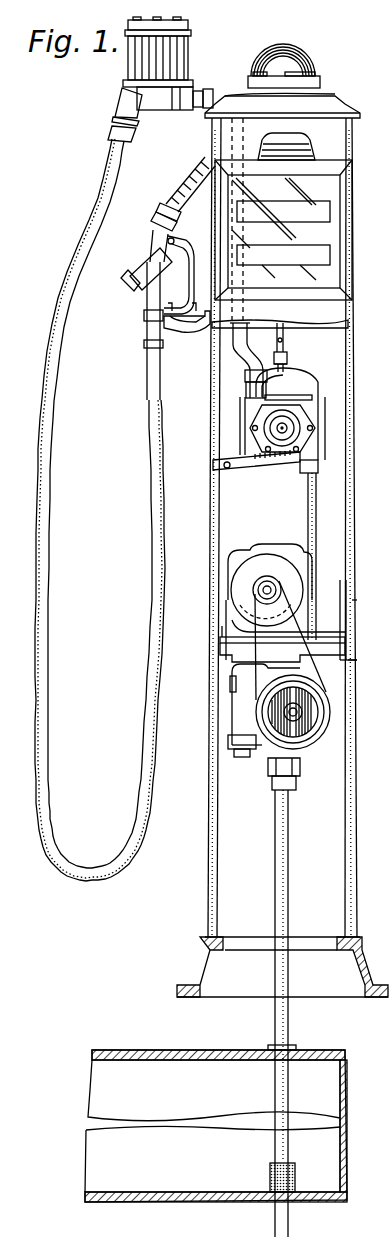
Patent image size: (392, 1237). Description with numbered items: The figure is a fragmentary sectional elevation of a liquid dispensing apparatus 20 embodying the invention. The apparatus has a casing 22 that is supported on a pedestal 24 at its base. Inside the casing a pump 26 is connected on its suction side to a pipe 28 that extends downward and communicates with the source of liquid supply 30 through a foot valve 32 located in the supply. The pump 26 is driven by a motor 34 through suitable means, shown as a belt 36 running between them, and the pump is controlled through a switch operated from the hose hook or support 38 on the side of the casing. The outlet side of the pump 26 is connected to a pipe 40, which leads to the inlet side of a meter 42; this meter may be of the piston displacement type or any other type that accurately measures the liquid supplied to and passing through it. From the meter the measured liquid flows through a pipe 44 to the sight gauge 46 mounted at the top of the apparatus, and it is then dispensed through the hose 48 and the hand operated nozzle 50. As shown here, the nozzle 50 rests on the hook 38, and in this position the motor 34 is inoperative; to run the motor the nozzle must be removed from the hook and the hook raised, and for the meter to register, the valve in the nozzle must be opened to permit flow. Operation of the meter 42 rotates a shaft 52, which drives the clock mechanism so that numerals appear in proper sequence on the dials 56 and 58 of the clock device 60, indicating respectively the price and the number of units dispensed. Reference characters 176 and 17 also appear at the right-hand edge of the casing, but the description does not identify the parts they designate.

The liquid dispensing apparatus 20 is at (357, 362).
The casing 22 is at (360, 764).
The pedestal 24 is at (380, 948).
The pump 26 is at (237, 708).
The pipe 28 is at (275, 807).
The source of liquid supply 30 is at (347, 1072).
The foot valve 32 is at (296, 1169).
The motor 34 is at (237, 578).
The belt 36 is at (257, 624).
The hose hook 38 is at (192, 325).
The pipe 40 is at (307, 503).
The meter 42 is at (318, 438).
The pipe 44 is at (240, 356).
The sight gauge 46 is at (184, 58).
The hose 48 is at (52, 480).
The hand operated nozzle 50 is at (153, 240).
The shaft 52 is at (287, 348).
The dial 56 is at (318, 208).
The dial 58 is at (320, 262).
The clock device 60 is at (320, 180).
The frame member 176 is at (372, 589).
The frame member 17 is at (370, 662).